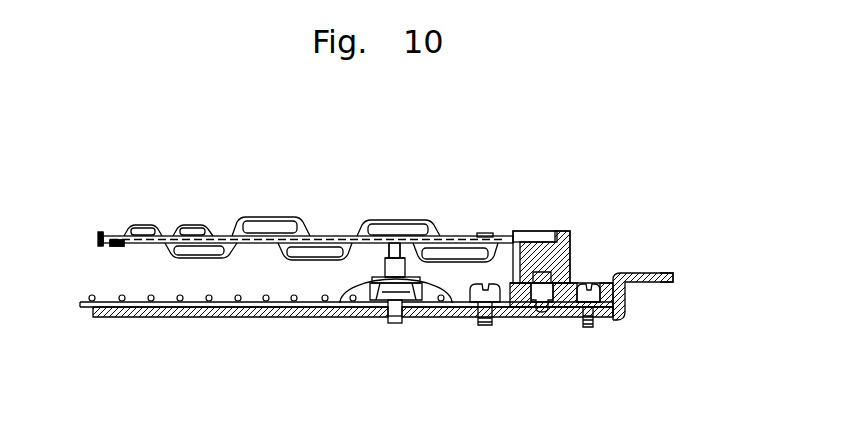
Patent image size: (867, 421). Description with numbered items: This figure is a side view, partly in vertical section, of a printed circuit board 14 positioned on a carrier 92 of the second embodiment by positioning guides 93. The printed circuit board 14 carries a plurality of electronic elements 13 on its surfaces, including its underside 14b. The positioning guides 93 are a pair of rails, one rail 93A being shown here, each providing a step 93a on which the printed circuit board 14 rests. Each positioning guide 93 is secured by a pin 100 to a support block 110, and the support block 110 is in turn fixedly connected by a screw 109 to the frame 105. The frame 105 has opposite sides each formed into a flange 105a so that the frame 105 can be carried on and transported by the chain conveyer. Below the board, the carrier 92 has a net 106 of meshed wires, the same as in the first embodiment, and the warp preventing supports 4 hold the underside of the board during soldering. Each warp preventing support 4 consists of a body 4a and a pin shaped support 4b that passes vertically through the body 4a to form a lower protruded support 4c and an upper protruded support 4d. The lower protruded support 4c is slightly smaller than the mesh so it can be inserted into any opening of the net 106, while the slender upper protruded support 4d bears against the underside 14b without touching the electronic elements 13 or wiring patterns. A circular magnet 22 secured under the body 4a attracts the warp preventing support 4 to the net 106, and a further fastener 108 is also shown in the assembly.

The electronic element 13 is at (272, 217).
The printed circuit board 14 is at (331, 236).
The upper protruded support 4d is at (387, 242).
The step 93a is at (524, 231).
The rail 93A is at (543, 231).
The positioning guide 93 is at (563, 231).
The pin 100 is at (549, 264).
The support block 110 is at (600, 278).
The frame 105 is at (654, 276).
The flange 105a is at (673, 277).
The underside of the printed circuit board 14b is at (143, 243).
The net 106 is at (240, 298).
The body 4a is at (342, 302).
The lower protruded support 4c is at (382, 312).
The warp preventing support 4 is at (386, 322).
The pin shaped support 4b is at (400, 324).
The circular magnet 22 is at (438, 318).
The screw 108 is at (484, 326).
The carrier 92 is at (531, 322).
The screw 109 is at (588, 328).